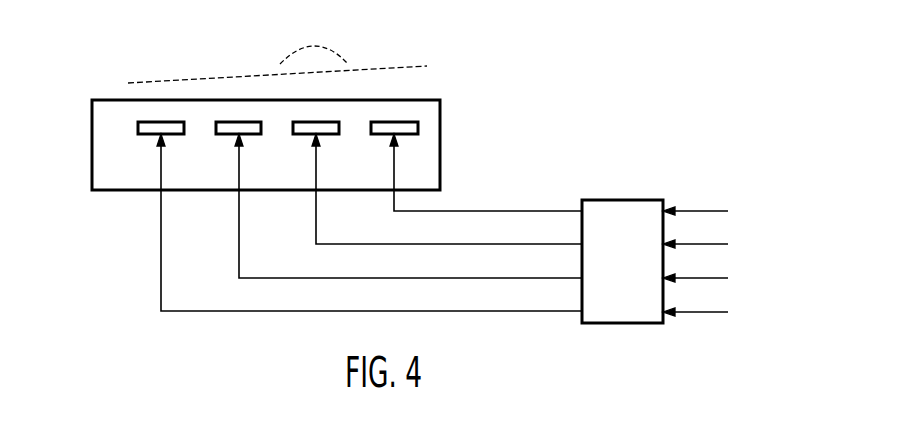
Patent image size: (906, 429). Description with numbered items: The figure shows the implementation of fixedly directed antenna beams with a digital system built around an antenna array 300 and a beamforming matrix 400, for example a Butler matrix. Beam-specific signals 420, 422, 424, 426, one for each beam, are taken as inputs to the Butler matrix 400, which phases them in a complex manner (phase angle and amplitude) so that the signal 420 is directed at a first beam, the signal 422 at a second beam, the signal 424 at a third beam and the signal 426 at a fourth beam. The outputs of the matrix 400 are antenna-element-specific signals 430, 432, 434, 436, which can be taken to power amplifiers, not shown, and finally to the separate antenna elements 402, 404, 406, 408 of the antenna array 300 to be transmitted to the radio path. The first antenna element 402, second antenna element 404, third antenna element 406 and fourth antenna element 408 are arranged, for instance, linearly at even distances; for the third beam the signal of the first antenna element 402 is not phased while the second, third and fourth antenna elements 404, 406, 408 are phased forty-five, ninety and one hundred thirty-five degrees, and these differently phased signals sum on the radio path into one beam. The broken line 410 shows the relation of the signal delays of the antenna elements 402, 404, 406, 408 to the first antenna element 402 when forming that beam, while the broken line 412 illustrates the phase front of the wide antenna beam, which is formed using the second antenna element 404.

The antenna array 300 is at (92, 132).
The Butler matrix 400 is at (602, 198).
The first antenna element 402 is at (381, 137).
The second antenna element 404 is at (303, 137).
The third antenna element 406 is at (226, 137).
The fourth antenna element 408 is at (148, 137).
The broken line 410 is at (228, 72).
The broken line 412 is at (322, 45).
The signal 420 is at (708, 211).
The signal 422 is at (713, 244).
The signal 424 is at (718, 278).
The signal 426 is at (707, 312).
The antenna-element-specific signal 430 is at (475, 201).
The antenna-element-specific signal 432 is at (313, 210).
The antenna-element-specific signal 434 is at (237, 231).
The antenna-element-specific signal 436 is at (160, 269).